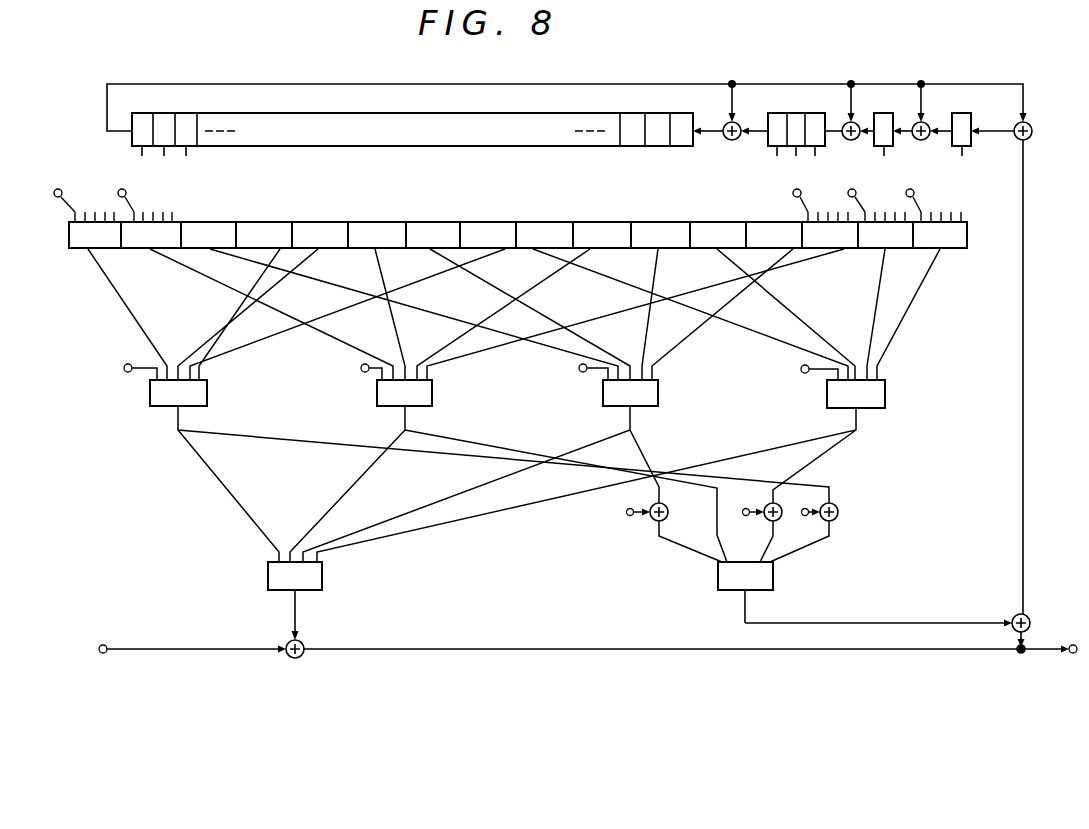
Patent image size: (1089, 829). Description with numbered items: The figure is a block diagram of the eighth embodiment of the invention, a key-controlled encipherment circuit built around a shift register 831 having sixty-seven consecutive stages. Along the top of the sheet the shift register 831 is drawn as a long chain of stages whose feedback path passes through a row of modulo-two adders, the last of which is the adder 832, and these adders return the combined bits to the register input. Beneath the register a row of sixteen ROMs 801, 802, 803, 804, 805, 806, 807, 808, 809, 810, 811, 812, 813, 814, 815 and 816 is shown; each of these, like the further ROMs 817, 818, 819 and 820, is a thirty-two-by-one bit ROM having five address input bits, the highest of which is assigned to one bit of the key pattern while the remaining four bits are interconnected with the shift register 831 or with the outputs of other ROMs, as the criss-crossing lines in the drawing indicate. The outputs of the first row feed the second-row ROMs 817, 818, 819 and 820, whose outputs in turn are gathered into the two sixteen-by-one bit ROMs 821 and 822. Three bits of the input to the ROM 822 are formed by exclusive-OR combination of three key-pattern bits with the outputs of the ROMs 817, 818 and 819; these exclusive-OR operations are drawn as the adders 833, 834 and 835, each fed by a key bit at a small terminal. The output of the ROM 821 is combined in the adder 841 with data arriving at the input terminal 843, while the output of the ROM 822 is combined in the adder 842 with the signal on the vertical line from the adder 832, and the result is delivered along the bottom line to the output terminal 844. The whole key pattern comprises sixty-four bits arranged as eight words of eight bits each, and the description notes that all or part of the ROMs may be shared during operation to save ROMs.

The 32-by-1 bits ROM 801 is at (80, 252).
The 32-by-1 bits ROM 802 is at (142, 252).
The 32-by-1 bits ROM 803 is at (198, 252).
The 32-by-1 bits ROM 804 is at (268, 222).
The 32-by-1 bits ROM 805 is at (339, 222).
The 32-by-1 bits ROM 806 is at (396, 222).
The 32-by-1 bits ROM 807 is at (456, 222).
The 32-by-1 bits ROM 808 is at (514, 222).
The 32-by-1 bits ROM 809 is at (571, 222).
The 32-by-1 bits ROM 810 is at (628, 222).
The 32-by-1 bits ROM 811 is at (682, 222).
The 32-by-1 bits ROM 812 is at (728, 222).
The 32-by-1 bits ROM 813 is at (780, 222).
The 32-by-1 bits ROM 814 is at (836, 258).
The 32-by-1 bits ROM 815 is at (887, 256).
The 32-by-1 bits ROM 816 is at (960, 256).
The 32-by-1 bits ROM 817 is at (150, 395).
The 32-by-1 bits ROM 818 is at (377, 395).
The 32-by-1 bits ROM 819 is at (603, 395).
The 32-by-1 bits ROM 820 is at (827, 396).
The 16-by-1 bits ROM 821 is at (322, 576).
The 16-by-1 bits ROM 822 is at (718, 579).
The shift register 831 is at (132, 138).
The modulo-2 adder 832 is at (1031, 138).
The modulo-2 adder 833 is at (652, 521).
The modulo-2 adder 834 is at (772, 520).
The modulo-2 adder 835 is at (838, 516).
The modulo-2 adder 841 is at (303, 641).
The modulo-2 adder 842 is at (1029, 615).
The input terminal 843 is at (107, 645).
The output terminal 844 is at (1084, 637).